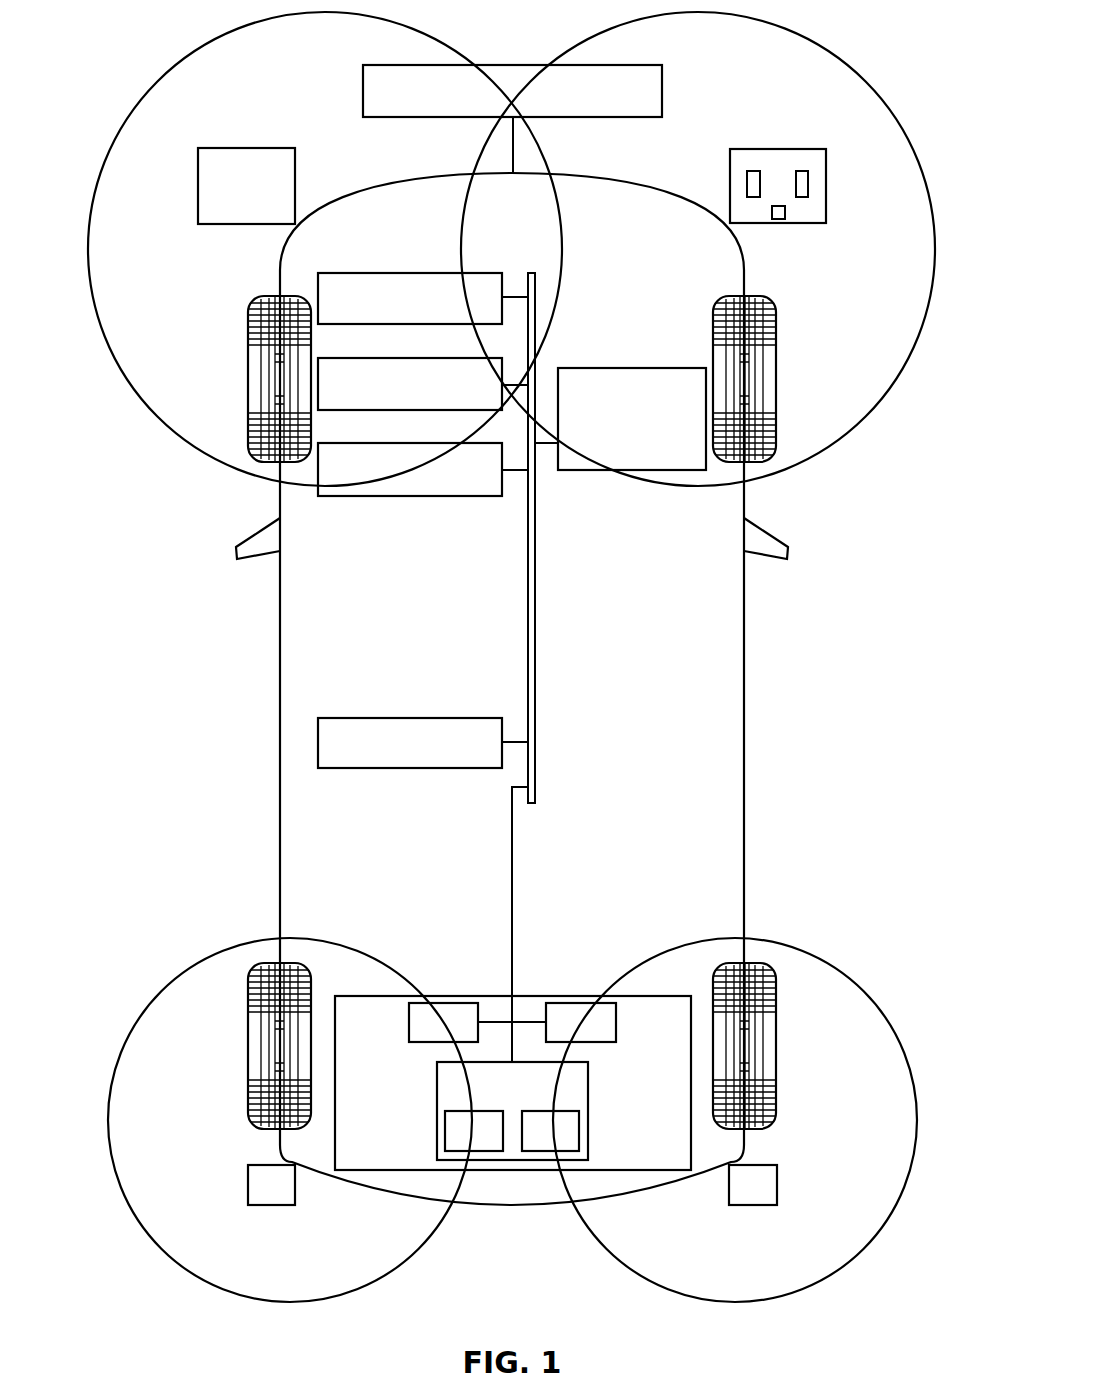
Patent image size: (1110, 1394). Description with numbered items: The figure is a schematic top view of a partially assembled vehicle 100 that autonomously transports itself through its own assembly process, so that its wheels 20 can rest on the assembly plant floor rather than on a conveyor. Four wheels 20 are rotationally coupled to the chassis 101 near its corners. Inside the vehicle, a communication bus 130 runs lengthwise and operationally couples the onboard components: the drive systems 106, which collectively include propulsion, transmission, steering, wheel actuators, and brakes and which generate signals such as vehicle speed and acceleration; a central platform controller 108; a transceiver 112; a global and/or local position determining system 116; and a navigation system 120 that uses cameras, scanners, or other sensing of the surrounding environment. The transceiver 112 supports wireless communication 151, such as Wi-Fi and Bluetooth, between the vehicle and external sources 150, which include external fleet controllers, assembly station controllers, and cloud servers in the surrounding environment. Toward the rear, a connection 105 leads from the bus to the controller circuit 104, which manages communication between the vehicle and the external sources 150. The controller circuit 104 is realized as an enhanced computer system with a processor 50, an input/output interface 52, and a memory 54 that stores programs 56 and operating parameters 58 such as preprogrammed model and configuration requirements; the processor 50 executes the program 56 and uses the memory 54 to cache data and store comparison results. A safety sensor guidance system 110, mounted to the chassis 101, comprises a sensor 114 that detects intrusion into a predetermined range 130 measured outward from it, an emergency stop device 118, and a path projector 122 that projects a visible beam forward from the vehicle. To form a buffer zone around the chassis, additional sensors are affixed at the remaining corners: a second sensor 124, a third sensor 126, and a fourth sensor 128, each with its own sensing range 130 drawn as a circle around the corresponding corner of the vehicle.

The wheels 20 is at (247, 365).
The processor 50 is at (567, 1036).
The input/output interface 52 is at (429, 1036).
The memory 54 is at (436, 1077).
The programs 56 is at (460, 1145).
The operating parameters 58 is at (536, 1145).
The partially assembled vehicle 100 is at (493, 211).
The chassis 101 is at (744, 260).
The controller circuit 104 is at (626, 1162).
The connection 105 is at (512, 938).
The drive systems 106 is at (455, 718).
The central platform controller 108 is at (665, 470).
The safety sensor guidance system 110 is at (710, 128).
The transceiver 112 is at (455, 273).
The sensor 114 is at (754, 170).
The position determining system 116 is at (455, 358).
The emergency stop device 118 is at (802, 170).
The navigation system 120 is at (455, 443).
The path projector 122 is at (786, 209).
The second sensor 124 is at (240, 148).
The third sensor 126 is at (247, 1185).
The fourth sensor 128 is at (778, 1185).
The communication bus 130 is at (537, 280).
The external sources 150 is at (622, 64).
The wireless communication 151 is at (513, 152).